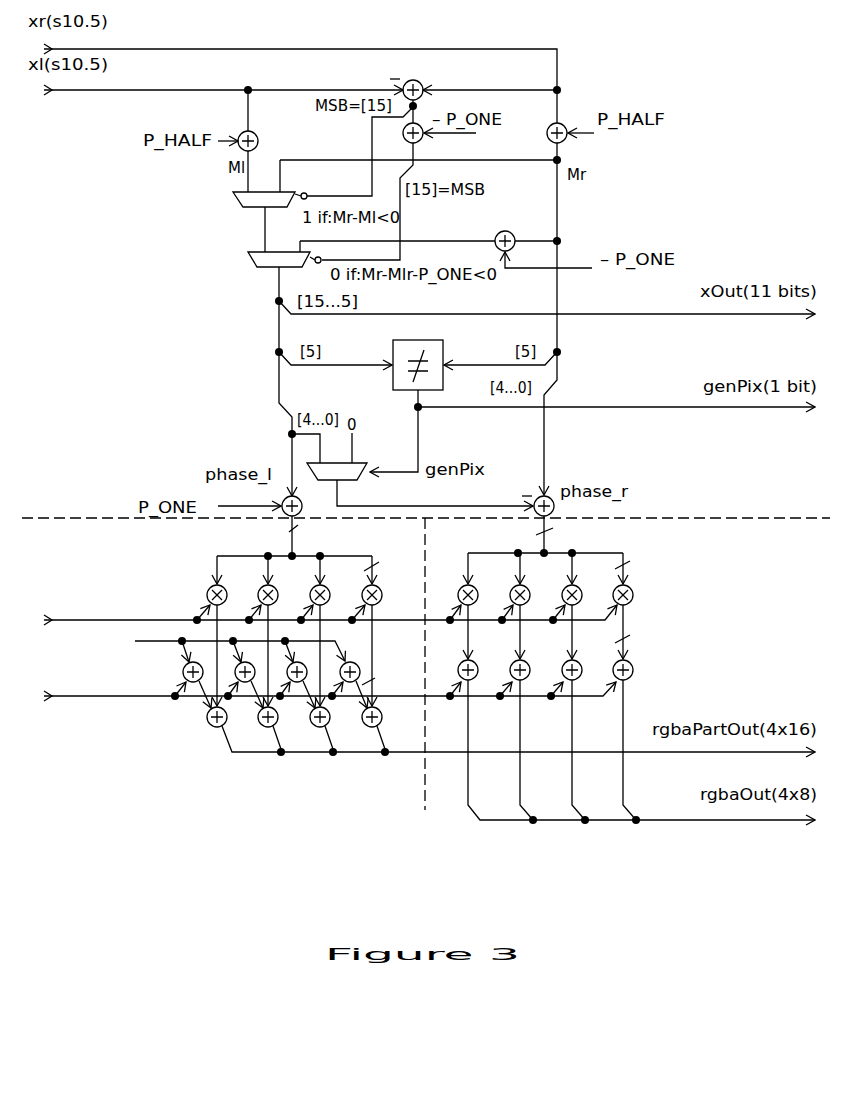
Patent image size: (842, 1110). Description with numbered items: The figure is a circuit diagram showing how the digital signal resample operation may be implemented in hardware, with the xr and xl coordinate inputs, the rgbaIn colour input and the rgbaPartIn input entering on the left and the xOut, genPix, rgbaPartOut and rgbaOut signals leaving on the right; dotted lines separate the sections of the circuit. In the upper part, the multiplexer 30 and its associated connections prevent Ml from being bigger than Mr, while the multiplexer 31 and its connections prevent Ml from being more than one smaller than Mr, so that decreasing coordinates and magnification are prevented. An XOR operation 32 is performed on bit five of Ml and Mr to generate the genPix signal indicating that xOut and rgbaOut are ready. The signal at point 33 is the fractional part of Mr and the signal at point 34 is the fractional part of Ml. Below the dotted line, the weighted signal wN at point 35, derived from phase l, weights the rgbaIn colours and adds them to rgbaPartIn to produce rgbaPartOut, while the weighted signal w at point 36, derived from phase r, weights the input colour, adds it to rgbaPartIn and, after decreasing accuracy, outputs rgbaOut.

The multiplexer 30 is at (233, 196).
The multiplexer 31 is at (249, 257).
The XOR operation 32 is at (392, 381).
The point 33 is at (545, 452).
The point 34 is at (290, 437).
The point 35 is at (290, 548).
The point 36 is at (544, 547).